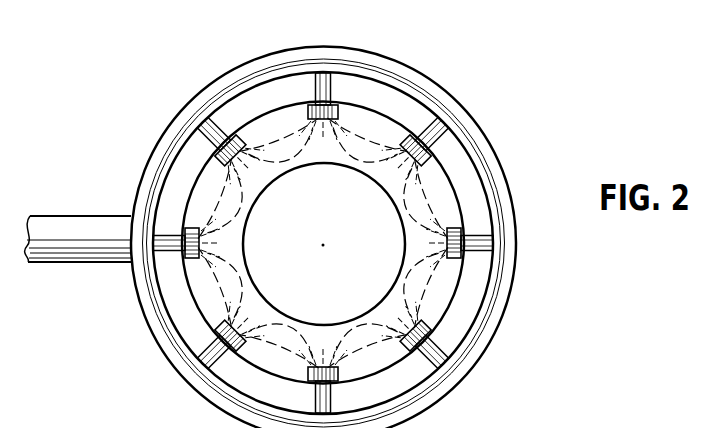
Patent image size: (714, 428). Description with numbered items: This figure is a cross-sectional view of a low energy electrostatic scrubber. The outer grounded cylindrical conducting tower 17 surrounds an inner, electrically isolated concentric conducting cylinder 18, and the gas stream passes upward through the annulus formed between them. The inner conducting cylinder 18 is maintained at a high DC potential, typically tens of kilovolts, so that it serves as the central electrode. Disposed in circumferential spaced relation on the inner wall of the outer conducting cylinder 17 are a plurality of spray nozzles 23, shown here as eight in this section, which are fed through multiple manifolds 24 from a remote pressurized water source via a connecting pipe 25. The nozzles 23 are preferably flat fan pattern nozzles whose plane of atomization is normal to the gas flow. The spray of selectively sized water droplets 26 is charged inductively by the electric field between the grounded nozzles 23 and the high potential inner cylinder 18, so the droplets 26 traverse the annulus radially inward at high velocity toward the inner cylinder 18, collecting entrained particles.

The outer grounded cylindrical conducting tower 17 is at (447, 175).
The inner conducting cylinder 18 is at (260, 192).
The spray nozzle 23 is at (227, 98).
The manifold 24 is at (386, 56).
The connecting pipe 25 is at (52, 263).
The water droplets 26 is at (280, 158).